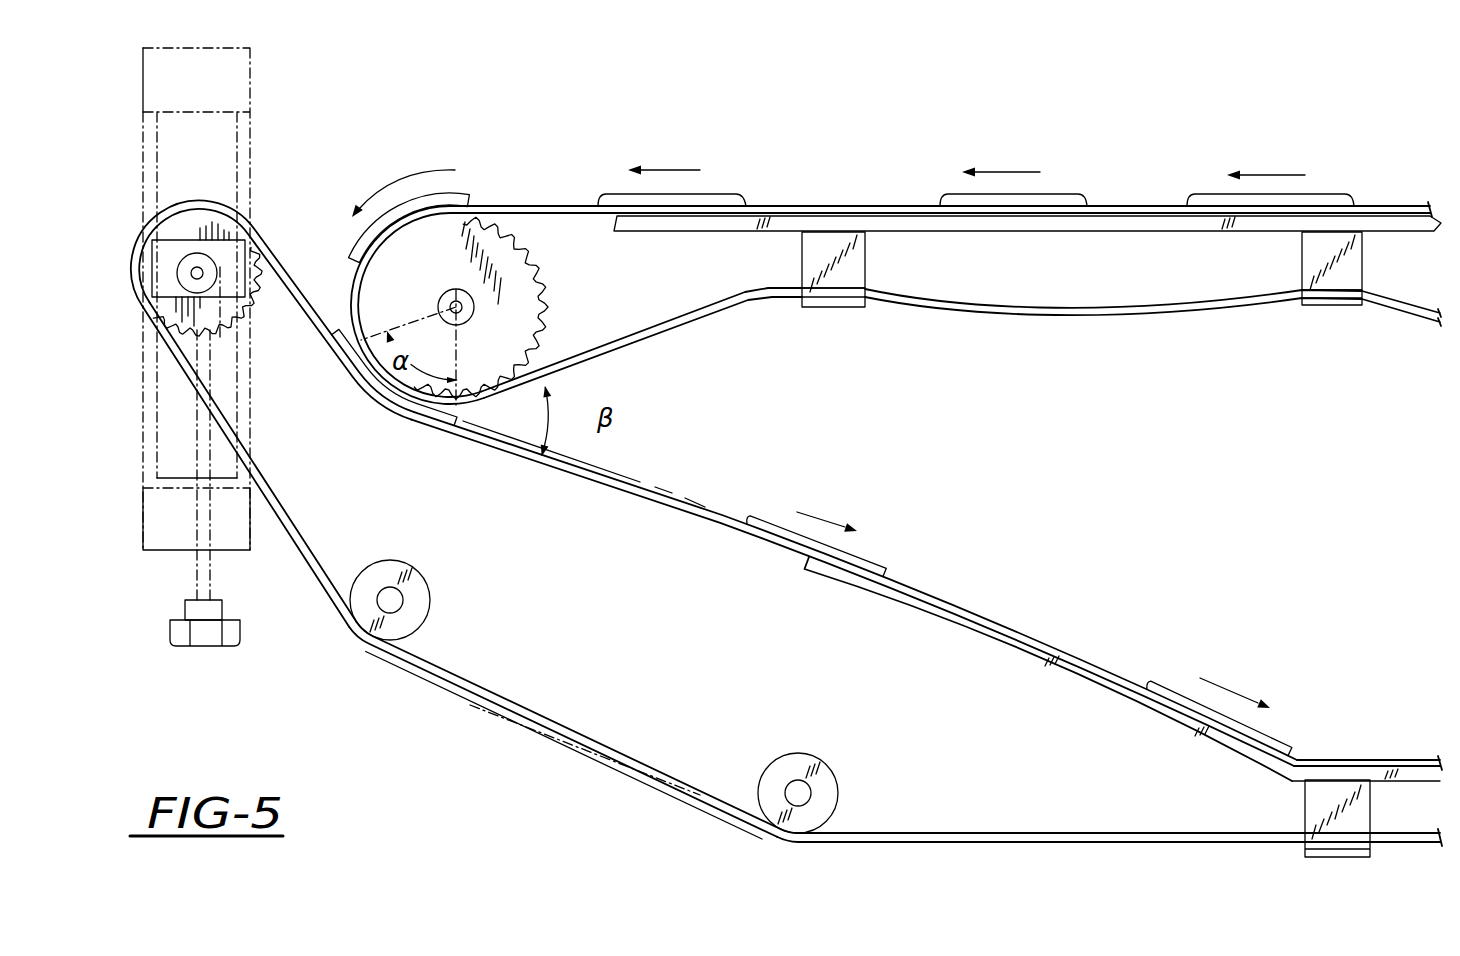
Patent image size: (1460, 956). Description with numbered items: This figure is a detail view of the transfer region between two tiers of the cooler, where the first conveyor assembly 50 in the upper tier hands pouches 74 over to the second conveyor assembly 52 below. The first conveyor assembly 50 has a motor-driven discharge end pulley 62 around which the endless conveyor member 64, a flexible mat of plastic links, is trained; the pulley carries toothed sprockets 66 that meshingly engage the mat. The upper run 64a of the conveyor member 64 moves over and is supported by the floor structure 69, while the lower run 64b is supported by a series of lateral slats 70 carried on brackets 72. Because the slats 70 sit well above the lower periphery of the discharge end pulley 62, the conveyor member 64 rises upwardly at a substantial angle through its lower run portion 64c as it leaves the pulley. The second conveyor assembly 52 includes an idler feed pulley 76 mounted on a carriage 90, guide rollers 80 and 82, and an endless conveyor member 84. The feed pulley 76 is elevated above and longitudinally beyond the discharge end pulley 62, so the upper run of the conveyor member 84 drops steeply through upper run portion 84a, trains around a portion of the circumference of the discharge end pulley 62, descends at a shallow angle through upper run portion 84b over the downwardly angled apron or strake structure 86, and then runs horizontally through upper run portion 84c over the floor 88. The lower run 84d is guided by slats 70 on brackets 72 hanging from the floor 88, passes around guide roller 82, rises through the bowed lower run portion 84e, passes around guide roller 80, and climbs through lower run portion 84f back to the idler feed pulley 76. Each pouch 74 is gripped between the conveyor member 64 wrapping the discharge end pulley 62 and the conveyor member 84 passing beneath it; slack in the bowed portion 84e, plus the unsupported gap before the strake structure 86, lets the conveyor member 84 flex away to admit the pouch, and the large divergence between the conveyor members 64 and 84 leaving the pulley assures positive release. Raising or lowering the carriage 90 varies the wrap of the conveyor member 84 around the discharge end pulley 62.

The first conveyor assembly 50 is at (1095, 198).
The second conveyor assembly 52 is at (759, 500).
The discharge end pulley 62 is at (556, 264).
The endless conveyor member 64 is at (896, 249).
The upper run 64a is at (583, 205).
The lower run 64b is at (1000, 311).
The lower run portion 64c is at (664, 335).
The toothed sprockets 66 is at (550, 317).
The floor structure 69 is at (958, 212).
The lateral slats 70 is at (835, 308).
The brackets 72 is at (1302, 255).
The pouches 74 is at (720, 193).
The idler feed pulley 76 is at (203, 200).
The guide roller 80 is at (428, 601).
The guide roller 82 is at (798, 755).
The endless conveyor member 84 is at (759, 500).
The upper run portion 84a is at (287, 283).
The upper run portion 84b is at (722, 513).
The upper run portion 84c is at (1317, 759).
The lower run 84d is at (1000, 832).
The lower run portion 84e is at (549, 722).
The lower run portion 84f is at (202, 400).
The apron or strake structure 86 is at (949, 622).
The floor 88 is at (1397, 775).
The carriage 90 is at (160, 267).